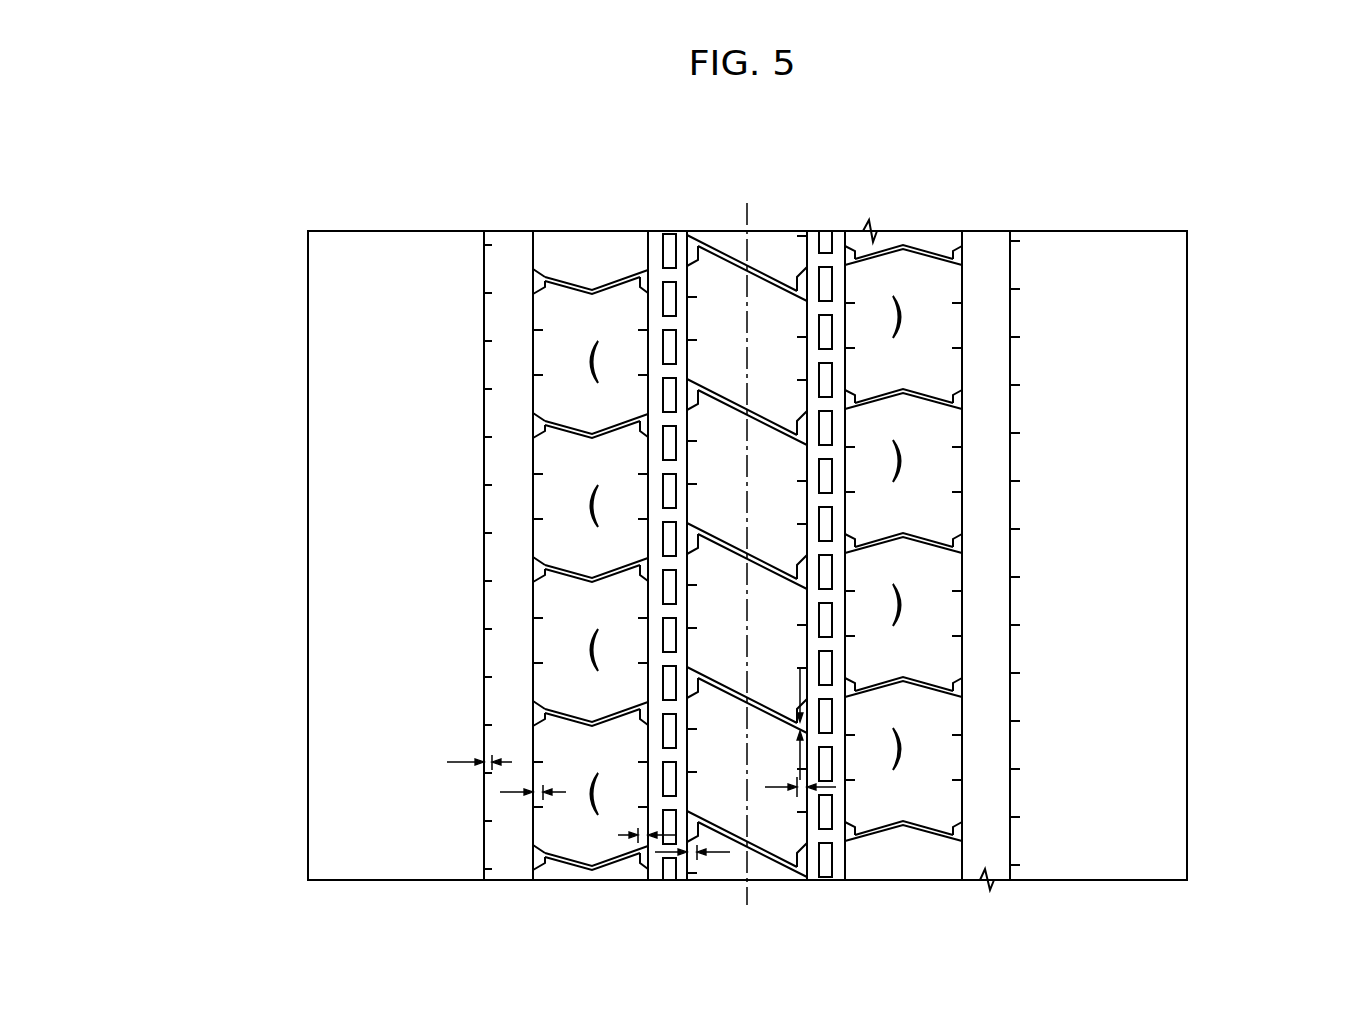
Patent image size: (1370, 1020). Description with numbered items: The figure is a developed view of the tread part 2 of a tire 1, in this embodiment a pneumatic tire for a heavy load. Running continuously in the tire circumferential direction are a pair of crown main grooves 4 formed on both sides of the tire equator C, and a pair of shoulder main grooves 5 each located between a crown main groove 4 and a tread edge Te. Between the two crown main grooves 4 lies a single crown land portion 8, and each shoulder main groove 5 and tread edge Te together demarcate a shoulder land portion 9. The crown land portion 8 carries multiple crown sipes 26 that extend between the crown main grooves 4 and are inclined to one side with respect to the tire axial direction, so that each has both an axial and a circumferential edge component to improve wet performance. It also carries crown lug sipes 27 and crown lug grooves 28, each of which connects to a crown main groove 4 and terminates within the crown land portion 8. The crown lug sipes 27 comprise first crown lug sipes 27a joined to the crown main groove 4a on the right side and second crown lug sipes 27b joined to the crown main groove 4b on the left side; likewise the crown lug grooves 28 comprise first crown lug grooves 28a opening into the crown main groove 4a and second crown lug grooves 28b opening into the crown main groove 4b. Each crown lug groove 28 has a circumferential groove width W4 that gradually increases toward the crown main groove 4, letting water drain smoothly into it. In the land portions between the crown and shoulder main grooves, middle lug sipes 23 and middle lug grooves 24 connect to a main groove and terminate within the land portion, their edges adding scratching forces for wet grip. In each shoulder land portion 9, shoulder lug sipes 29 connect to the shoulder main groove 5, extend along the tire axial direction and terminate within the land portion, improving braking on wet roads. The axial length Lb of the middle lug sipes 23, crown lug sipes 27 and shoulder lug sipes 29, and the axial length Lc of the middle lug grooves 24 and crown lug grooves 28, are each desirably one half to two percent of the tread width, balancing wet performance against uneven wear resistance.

The tire 1 is at (1290, 187).
The tread part 2 is at (1207, 227).
The crown main groove 4 is at (751, 518).
The crown main groove on one side 4a is at (835, 262).
The crown main groove on the other side 4b is at (657, 262).
The shoulder main groove 5 is at (508, 265).
The crown land portion 8 is at (733, 247).
The shoulder land portion 9 is at (358, 268).
The middle lug sipe 23 is at (538, 808).
The middle lug groove 24 is at (649, 858).
The crown sipe 26 is at (770, 277).
The crown lug sipe 27 is at (752, 554).
The first crown lug sipe 27a is at (797, 481).
The second crown lug sipe 27b is at (697, 440).
The crown lug groove 28 is at (752, 556).
The first crown lug groove 28a is at (803, 573).
The second crown lug groove 28b is at (692, 535).
The shoulder lug sipe 29 is at (478, 823).
The tire equator C is at (747, 539).
The tread edge Te is at (308, 258).
The tire axial direction length of lug sipes Lb is at (478, 758).
The tire axial direction length of lug grooves Lc is at (622, 836).
The tire circumferential direction groove width W4 is at (798, 724).